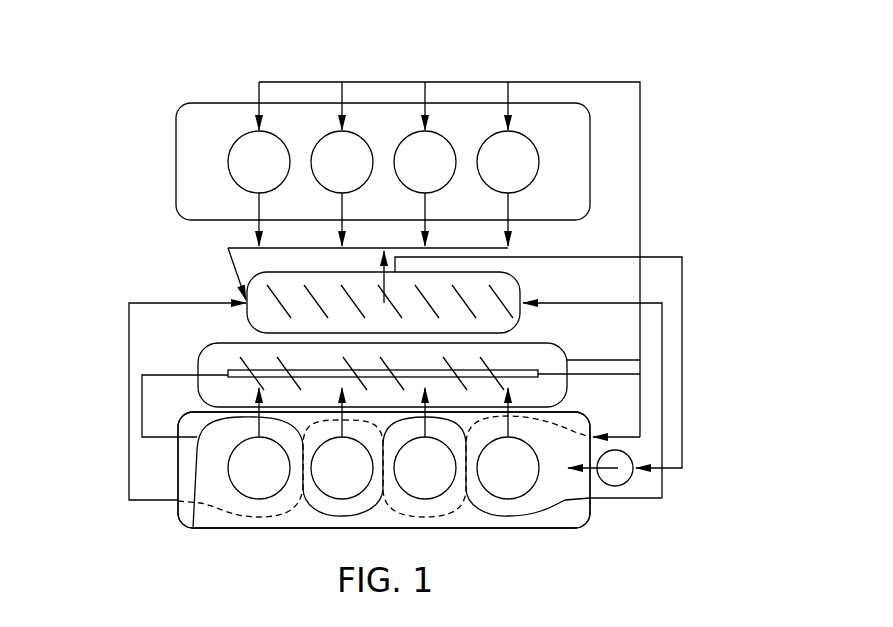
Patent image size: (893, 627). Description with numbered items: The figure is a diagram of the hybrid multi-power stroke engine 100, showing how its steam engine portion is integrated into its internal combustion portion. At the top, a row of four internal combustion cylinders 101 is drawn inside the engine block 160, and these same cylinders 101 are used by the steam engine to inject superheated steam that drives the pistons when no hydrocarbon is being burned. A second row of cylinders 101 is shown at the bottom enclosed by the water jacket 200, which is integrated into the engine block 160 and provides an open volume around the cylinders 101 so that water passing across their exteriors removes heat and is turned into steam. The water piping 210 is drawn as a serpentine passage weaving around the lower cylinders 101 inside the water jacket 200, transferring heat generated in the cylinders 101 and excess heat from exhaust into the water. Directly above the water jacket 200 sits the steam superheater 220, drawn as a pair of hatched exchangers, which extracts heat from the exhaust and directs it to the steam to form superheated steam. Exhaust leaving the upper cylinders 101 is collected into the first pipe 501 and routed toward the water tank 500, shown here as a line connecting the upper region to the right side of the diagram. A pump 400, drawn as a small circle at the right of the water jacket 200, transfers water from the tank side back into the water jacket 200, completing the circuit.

The hybrid multi-power stroke engine 100 is at (678, 95).
The internal combustion cylinder 101 is at (240, 134).
The engine block 160 is at (590, 168).
The water jacket 200 is at (115, 410).
The water piping 210 is at (195, 528).
The steam superheater 220 is at (115, 300).
The pump 400 is at (615, 486).
The water tank 500 is at (519, 283).
The first pipe 501 is at (234, 266).